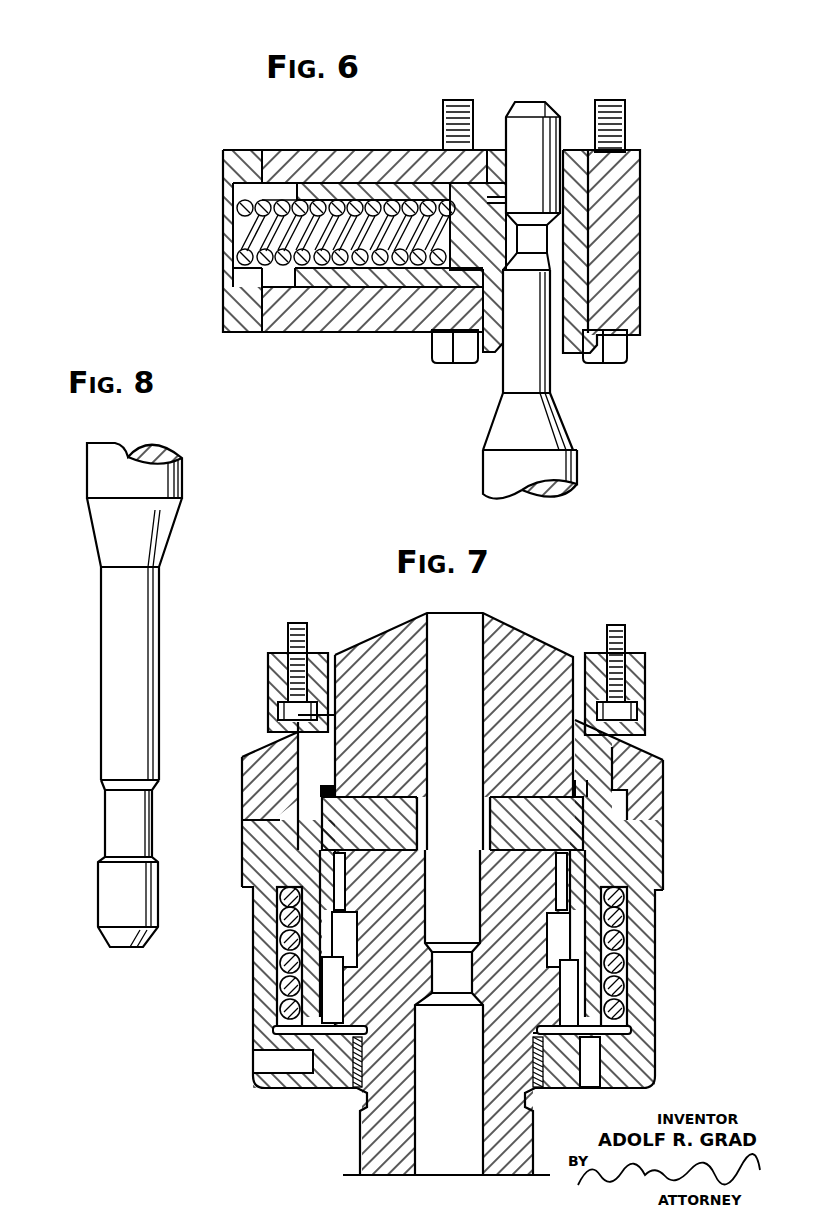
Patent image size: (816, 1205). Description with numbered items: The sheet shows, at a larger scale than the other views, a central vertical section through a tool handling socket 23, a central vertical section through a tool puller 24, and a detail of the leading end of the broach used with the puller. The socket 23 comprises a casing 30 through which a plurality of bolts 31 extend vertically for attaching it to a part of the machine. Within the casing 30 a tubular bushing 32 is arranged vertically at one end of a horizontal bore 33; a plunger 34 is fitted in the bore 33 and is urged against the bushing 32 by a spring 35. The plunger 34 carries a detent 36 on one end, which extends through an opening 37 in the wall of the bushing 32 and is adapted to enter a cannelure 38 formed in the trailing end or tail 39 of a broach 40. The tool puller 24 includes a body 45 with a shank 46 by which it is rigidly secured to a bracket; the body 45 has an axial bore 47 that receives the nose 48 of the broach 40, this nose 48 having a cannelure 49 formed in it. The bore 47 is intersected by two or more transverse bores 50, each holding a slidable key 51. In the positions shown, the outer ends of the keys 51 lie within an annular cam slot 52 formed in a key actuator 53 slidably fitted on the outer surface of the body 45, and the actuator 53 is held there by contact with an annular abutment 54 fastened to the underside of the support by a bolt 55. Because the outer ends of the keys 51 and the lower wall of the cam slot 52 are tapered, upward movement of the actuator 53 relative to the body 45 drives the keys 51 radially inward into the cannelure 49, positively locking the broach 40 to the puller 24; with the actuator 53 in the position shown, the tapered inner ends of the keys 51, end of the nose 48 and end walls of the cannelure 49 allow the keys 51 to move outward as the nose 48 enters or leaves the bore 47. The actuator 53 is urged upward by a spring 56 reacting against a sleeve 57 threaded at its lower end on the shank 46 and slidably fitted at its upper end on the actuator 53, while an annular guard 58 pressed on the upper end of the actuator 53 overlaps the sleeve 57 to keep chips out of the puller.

In FIG. 6, the socket 23 is at (660, 225).
In FIG. 7, the tool puller 24 is at (672, 920).
In FIG. 6, the casing 30 is at (417, 323).
In FIG. 6, the bolts 31 is at (602, 100).
In FIG. 6, the tubular bushing 32 is at (492, 345).
In FIG. 6, the horizontal bore 33 is at (277, 193).
In FIG. 6, the plunger 34 is at (368, 187).
In FIG. 6, the spring 35 is at (248, 195).
In FIG. 6, the detent 36 is at (495, 238).
In FIG. 6, the opening 37 is at (497, 202).
In FIG. 6, the cannelure 38 is at (530, 255).
In FIG. 6, the trailing end or tail 39 is at (537, 375).
In FIG. 6, the broach 40 is at (557, 466).
In FIG. 8, the broach 40 is at (107, 473).
In FIG. 7, the body 45 is at (518, 645).
In FIG. 7, the shank 46 is at (375, 1148).
In FIG. 7, the axial bore 47 is at (440, 630).
In FIG. 8, the nose 48 is at (118, 617).
In FIG. 8, the cannelure 49 is at (120, 823).
In FIG. 7, the transverse bores 50 is at (520, 807).
In FIG. 7, the keys 51 is at (510, 850).
In FIG. 7, the annular cam slot 52 is at (583, 793).
In FIG. 7, the key actuator 53 is at (598, 750).
In FIG. 7, the annular abutment 54 is at (642, 670).
In FIG. 7, the bolt 55 is at (288, 623).
In FIG. 7, the spring 56 is at (618, 1002).
In FIG. 7, the sleeve 57 is at (642, 1060).
In FIG. 7, the annular guard 58 is at (640, 780).